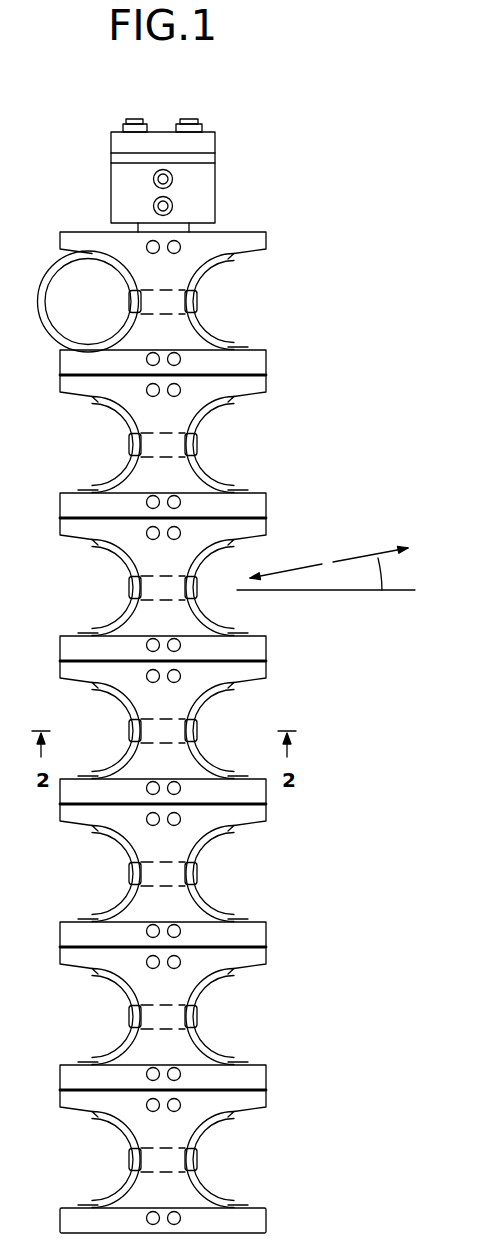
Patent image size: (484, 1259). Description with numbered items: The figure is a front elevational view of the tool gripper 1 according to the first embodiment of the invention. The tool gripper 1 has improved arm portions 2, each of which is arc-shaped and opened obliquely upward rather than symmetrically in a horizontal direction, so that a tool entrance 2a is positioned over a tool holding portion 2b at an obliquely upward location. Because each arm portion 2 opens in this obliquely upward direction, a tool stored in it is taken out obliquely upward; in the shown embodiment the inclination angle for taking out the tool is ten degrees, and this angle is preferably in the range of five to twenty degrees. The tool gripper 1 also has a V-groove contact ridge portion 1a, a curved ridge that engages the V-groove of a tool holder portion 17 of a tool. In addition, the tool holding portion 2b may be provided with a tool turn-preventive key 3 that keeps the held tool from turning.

The tool gripper 1 is at (252, 210).
The V-groove contact ridge portion 1a is at (227, 352).
The arm portion 2 is at (257, 299).
The tool entrance 2a is at (257, 252).
The tool holding portion 2b is at (207, 332).
The tool turn-preventive key 3 is at (197, 442).
The tool holder portion 17 is at (53, 335).